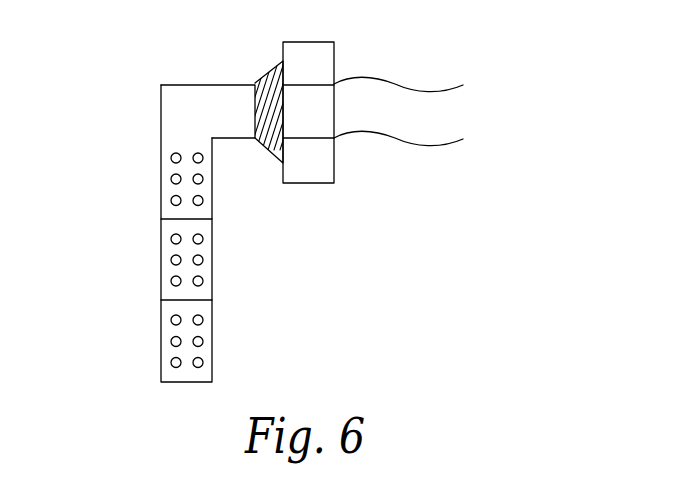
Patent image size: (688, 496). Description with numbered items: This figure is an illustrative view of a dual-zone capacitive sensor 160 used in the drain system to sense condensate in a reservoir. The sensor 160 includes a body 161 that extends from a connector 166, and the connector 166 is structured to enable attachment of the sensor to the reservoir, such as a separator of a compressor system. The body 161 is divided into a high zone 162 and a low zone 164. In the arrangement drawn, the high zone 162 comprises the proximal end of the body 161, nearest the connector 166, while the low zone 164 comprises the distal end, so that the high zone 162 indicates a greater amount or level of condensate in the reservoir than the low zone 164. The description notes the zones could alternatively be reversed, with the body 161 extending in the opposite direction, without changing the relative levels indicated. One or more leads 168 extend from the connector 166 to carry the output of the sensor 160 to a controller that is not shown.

The dual-zone capacitive sensor 160 is at (198, 98).
The body 161 is at (161, 121).
The high zone 162 is at (161, 201).
The low zone 164 is at (161, 346).
The connector 166 is at (302, 183).
The leads 168 is at (387, 76).